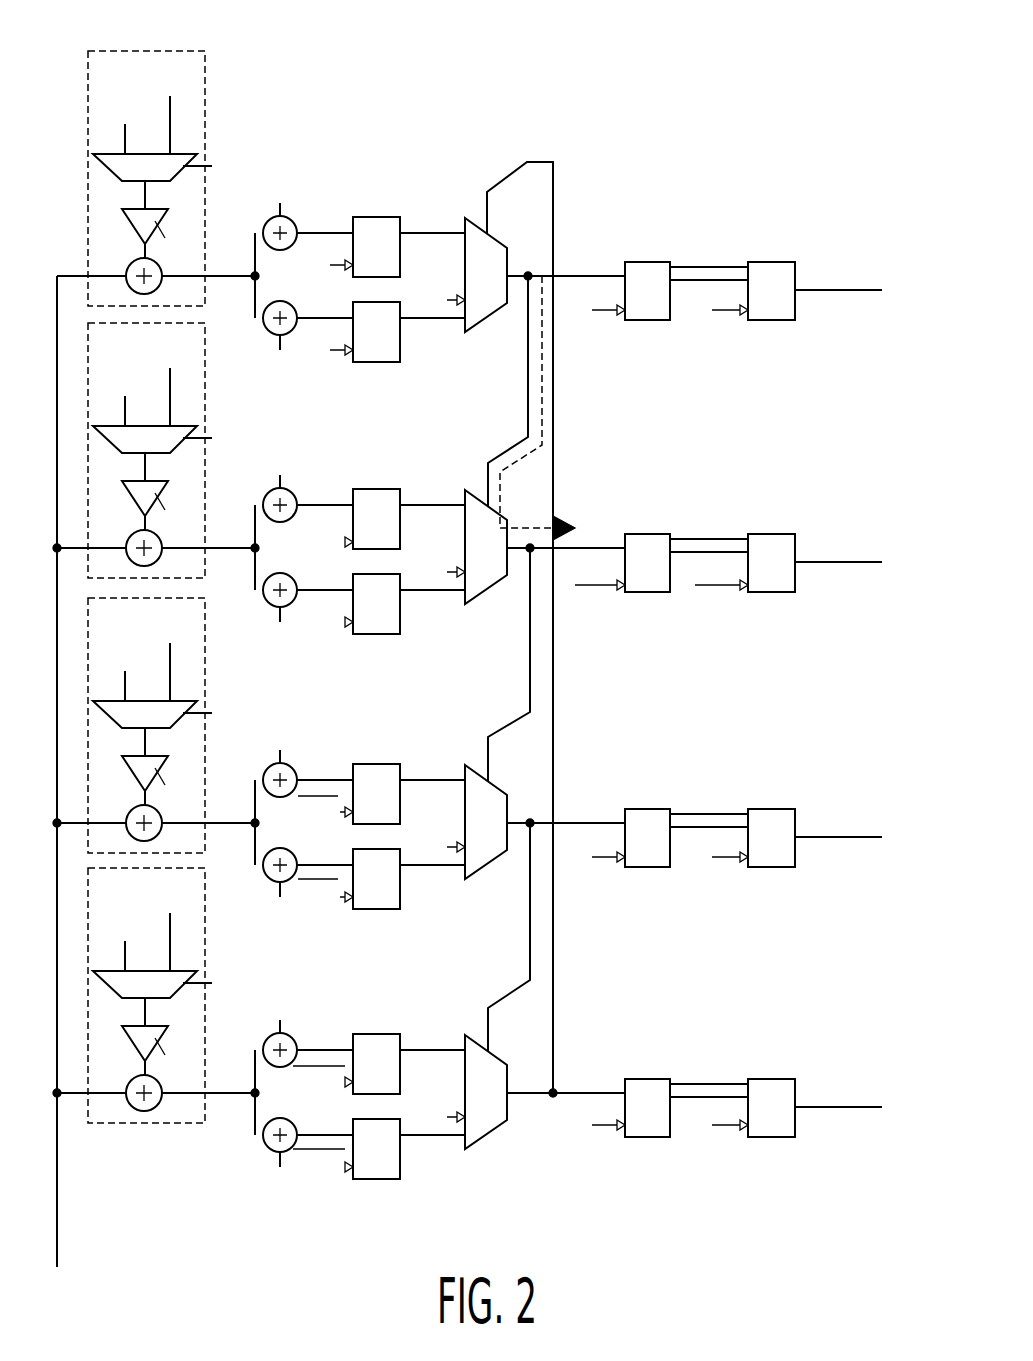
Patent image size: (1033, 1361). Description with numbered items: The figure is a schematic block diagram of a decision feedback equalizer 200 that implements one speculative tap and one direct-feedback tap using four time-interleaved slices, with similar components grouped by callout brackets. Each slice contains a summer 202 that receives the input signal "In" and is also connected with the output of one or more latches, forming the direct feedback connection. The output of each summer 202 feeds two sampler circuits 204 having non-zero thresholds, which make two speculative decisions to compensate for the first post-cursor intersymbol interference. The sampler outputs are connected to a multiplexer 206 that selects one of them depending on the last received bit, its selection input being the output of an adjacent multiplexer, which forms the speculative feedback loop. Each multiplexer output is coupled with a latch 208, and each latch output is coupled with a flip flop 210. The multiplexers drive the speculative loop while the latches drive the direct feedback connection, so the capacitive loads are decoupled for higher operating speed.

The decision feedback equalizer 200 is at (821, 85).
The summer 202 is at (215, 0).
The sampler circuits 204 is at (417, 1242).
The multiplexer 206 is at (590, 1242).
The latch 208 is at (680, 1240).
The flip flop 210 is at (810, 1240).